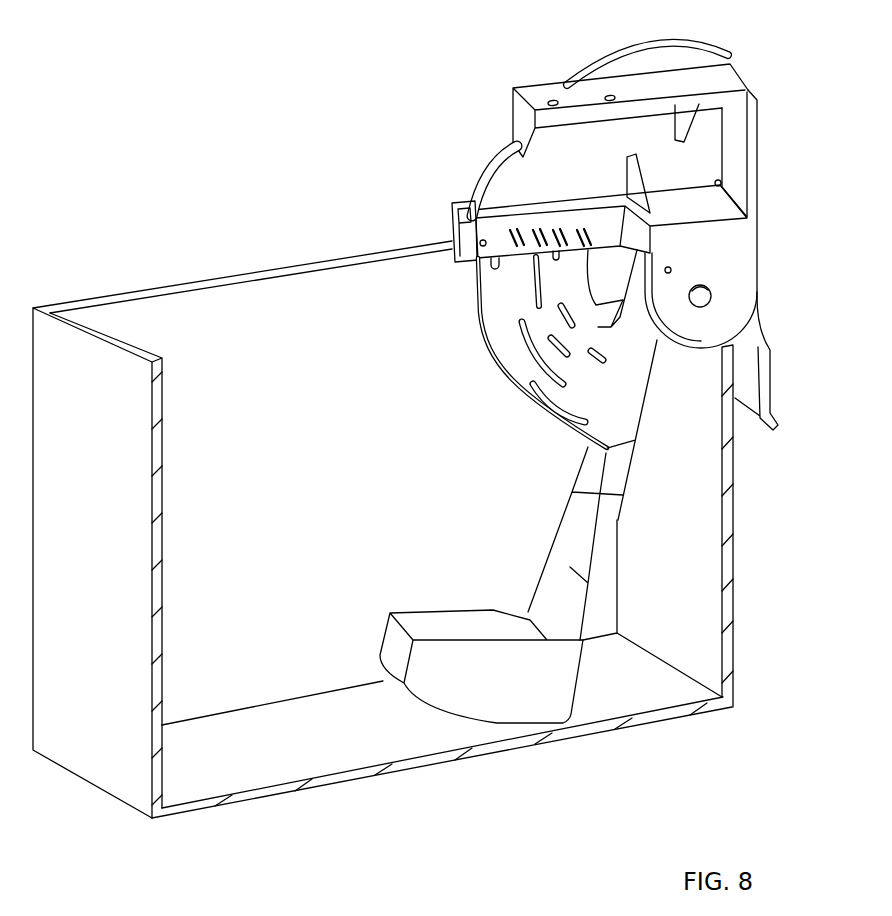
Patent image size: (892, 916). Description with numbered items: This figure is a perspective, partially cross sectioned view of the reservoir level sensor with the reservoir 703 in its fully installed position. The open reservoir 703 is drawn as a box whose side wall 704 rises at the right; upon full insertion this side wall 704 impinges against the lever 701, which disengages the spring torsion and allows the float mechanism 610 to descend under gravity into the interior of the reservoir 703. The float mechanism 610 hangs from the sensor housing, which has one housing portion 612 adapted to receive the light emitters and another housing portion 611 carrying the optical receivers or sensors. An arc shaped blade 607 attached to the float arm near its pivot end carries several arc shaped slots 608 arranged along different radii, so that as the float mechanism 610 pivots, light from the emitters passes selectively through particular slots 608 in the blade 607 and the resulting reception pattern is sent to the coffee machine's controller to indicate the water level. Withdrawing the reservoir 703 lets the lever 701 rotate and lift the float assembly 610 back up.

The arc shaped blade 607 is at (503, 297).
The arc shaped slots 608 is at (533, 357).
The float mechanism 610 is at (490, 546).
The housing portion 611 is at (497, 152).
The housing portion 612 is at (717, 64).
The lever 701 is at (750, 388).
The reservoir 703 is at (263, 743).
The side wall 704 is at (735, 548).